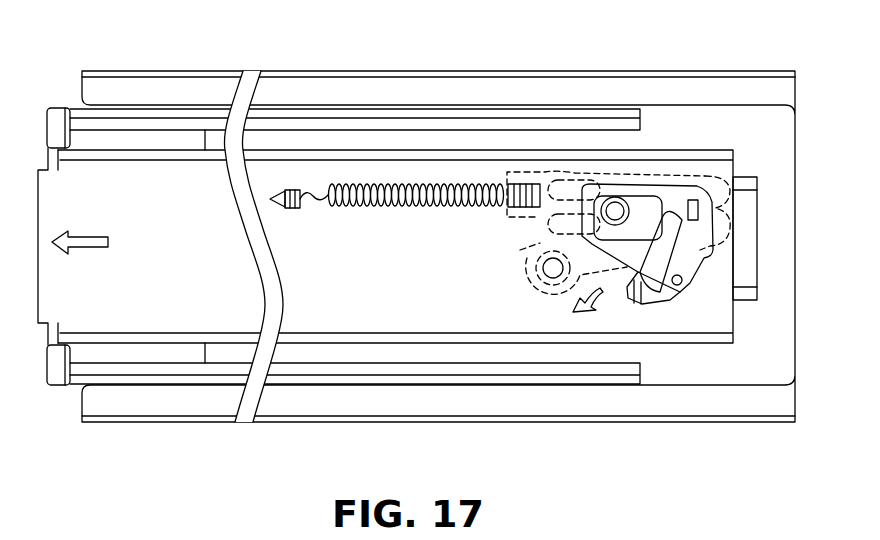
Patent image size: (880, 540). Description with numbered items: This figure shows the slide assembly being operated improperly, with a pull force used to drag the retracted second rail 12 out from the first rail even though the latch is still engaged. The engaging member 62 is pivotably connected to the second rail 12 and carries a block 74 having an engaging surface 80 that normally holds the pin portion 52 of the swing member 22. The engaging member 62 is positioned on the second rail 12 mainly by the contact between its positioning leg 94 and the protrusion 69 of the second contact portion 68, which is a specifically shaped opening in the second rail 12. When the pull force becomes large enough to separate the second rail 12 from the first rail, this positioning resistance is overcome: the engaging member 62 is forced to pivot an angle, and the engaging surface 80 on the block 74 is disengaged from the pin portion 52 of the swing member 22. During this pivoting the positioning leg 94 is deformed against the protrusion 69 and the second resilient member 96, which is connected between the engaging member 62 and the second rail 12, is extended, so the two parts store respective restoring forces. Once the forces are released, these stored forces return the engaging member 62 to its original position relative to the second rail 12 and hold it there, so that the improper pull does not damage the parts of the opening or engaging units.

The second rail 12 is at (668, 317).
The swing member 22 is at (717, 193).
The pin portion 52 is at (590, 175).
The engaging member 62 is at (520, 250).
The second contact portion 68 is at (665, 247).
The protrusion 69 is at (673, 290).
The block 74 is at (623, 270).
The engaging surface 80 is at (652, 203).
The positioning leg 94 is at (677, 280).
The second resilient member 96 is at (420, 183).